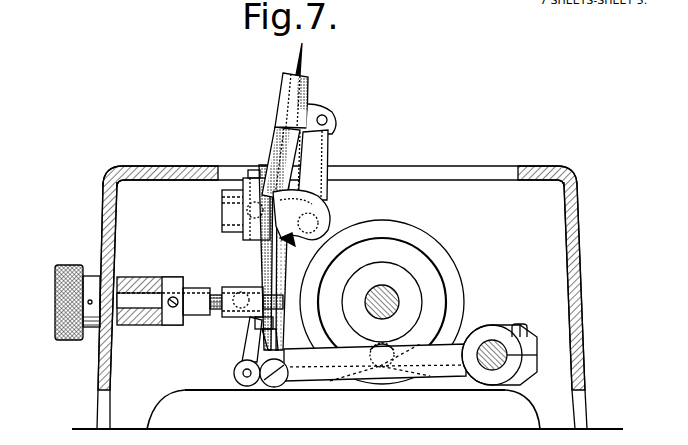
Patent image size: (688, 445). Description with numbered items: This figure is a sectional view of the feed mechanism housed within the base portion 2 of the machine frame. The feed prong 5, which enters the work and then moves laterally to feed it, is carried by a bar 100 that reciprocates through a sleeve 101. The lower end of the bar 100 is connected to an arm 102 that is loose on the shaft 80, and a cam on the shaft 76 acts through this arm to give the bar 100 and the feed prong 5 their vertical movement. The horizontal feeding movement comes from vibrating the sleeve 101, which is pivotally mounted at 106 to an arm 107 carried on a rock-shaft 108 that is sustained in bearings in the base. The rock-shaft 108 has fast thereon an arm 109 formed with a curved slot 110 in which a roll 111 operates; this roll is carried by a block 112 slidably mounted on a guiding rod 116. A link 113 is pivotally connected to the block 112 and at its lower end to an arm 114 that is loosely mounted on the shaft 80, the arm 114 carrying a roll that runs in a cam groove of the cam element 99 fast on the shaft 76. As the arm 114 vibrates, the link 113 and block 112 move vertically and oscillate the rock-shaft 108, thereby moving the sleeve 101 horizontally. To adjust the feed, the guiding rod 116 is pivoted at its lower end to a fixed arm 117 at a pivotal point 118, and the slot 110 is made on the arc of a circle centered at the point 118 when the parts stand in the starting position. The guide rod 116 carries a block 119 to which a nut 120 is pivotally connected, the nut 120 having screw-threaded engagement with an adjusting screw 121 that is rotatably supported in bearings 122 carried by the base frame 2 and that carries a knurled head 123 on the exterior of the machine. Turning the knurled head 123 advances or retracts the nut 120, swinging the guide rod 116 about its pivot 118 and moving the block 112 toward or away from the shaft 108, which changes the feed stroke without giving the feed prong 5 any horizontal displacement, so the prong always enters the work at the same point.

The base portion 2 is at (531, 167).
The feed prong 5 is at (295, 53).
The shaft 76 is at (398, 297).
The shaft 80 is at (495, 348).
The cam element 99 is at (431, 238).
The bar 100 is at (278, 152).
The sleeve 101 is at (308, 95).
The arm 102 is at (255, 388).
The pivot 106 is at (328, 120).
The arm 107 is at (323, 147).
The rock-shaft 108 is at (312, 219).
The arm 109 is at (223, 226).
The curved slot 110 is at (222, 206).
The roll 111 is at (222, 199).
The block 112 is at (244, 182).
The link 113 is at (253, 252).
The arm 114 is at (306, 358).
The guiding rod 116 is at (267, 338).
The fixed arm 117 is at (333, 376).
The pivotal point 118 is at (275, 392).
The block 119 is at (273, 284).
The nut 120 is at (236, 288).
The adjusting screw 121 is at (218, 310).
The bearings 122 is at (136, 278).
The knurled head 123 is at (61, 264).